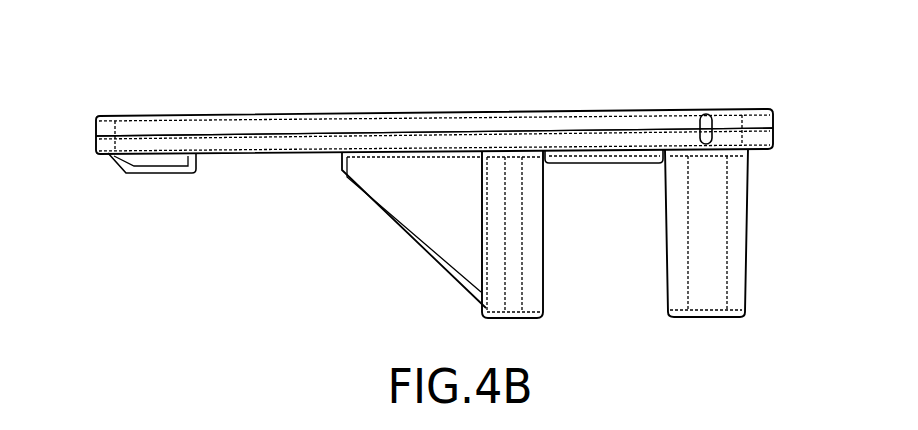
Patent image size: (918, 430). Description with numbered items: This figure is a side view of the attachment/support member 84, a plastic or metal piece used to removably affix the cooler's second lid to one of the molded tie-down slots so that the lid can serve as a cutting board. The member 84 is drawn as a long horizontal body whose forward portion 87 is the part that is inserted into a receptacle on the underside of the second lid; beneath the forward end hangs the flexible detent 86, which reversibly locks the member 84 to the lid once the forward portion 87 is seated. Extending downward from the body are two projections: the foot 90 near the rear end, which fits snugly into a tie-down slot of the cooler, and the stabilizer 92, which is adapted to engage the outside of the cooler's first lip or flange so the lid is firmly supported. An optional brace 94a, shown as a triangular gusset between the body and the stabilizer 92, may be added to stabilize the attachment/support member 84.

The attachment/support member 84 is at (292, 118).
The flexible detent 86 is at (145, 183).
The forward portion 87 is at (256, 137).
The foot 90 is at (759, 221).
The stabilizer 92 is at (554, 241).
The brace 94a is at (440, 201).